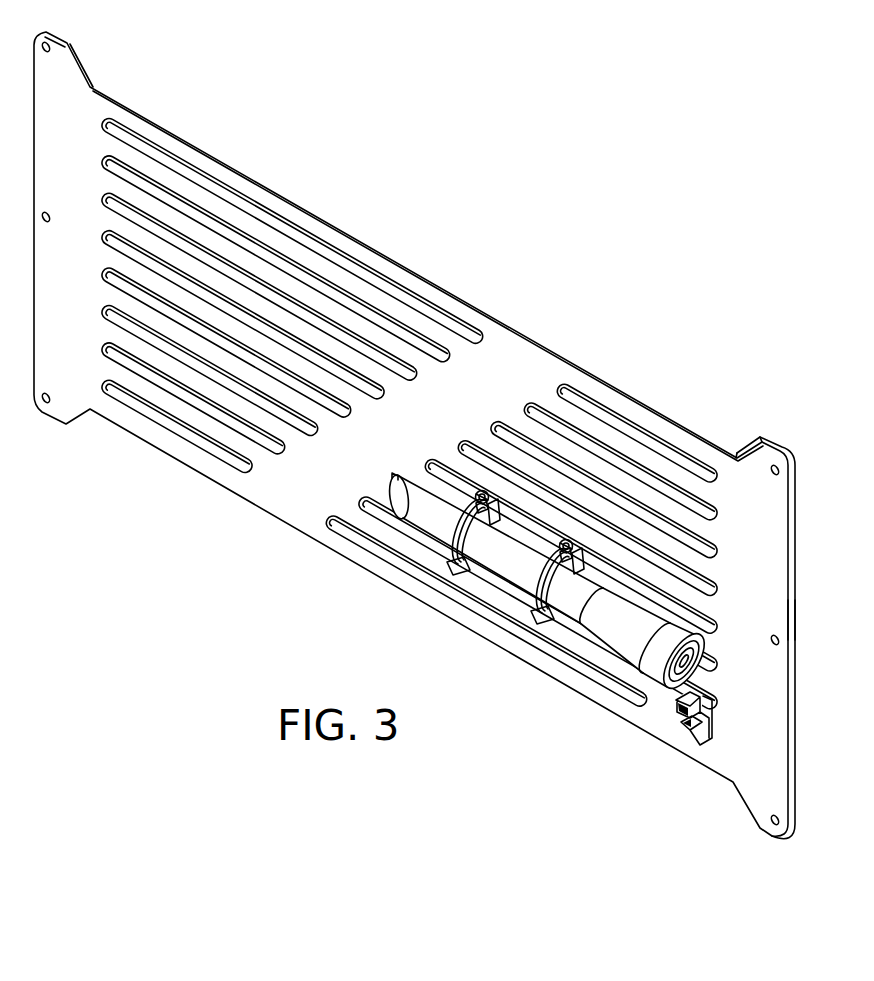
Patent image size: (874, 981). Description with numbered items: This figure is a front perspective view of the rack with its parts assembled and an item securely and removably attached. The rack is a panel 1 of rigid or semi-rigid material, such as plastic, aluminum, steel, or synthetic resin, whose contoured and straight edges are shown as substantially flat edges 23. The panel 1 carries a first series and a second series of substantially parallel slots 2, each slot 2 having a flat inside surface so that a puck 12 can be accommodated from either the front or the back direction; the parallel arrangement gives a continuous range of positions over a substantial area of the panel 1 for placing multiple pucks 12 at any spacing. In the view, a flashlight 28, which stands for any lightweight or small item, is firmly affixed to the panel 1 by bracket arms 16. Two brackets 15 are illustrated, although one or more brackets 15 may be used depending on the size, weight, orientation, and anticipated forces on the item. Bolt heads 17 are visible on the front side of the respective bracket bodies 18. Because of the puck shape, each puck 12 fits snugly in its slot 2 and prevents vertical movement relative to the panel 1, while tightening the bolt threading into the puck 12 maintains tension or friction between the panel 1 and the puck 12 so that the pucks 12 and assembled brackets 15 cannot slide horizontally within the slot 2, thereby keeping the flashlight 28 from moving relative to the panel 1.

The panel 1 is at (513, 365).
The slot 2 is at (606, 412).
The puck 12 is at (500, 505).
The bracket 15 is at (458, 572).
The bracket arm 16 is at (432, 543).
The bolt head 17 is at (476, 502).
The bracket body 18 is at (480, 491).
The flat edge 23 is at (797, 612).
The flashlight 28 is at (580, 607).